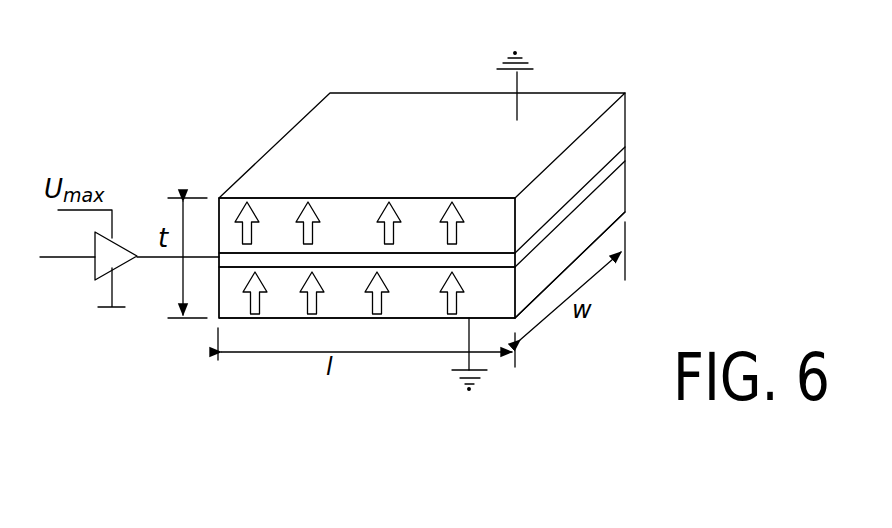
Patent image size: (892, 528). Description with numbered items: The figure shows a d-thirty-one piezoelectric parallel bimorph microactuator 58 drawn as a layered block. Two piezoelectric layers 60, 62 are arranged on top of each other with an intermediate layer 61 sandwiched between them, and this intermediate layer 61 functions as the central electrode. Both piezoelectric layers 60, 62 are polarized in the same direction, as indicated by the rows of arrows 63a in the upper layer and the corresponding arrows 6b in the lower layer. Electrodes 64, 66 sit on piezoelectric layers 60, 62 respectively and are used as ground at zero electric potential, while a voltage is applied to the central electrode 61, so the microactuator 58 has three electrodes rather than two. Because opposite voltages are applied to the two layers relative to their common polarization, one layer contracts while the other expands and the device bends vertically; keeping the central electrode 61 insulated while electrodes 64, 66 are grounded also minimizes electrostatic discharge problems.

The parallel bimorph microactuator 58 is at (690, 237).
The piezoelectric layer 60 is at (618, 123).
The intermediate layer 61 is at (622, 158).
The piezoelectric layer 62 is at (614, 193).
The arrow 63a is at (243, 214).
The polarization direction of lower layer 6b is at (461, 286).
The electrode 64 is at (485, 118).
The electrode 66 is at (455, 318).